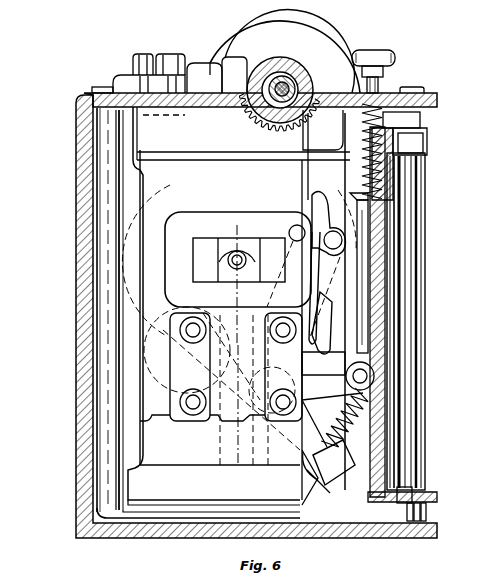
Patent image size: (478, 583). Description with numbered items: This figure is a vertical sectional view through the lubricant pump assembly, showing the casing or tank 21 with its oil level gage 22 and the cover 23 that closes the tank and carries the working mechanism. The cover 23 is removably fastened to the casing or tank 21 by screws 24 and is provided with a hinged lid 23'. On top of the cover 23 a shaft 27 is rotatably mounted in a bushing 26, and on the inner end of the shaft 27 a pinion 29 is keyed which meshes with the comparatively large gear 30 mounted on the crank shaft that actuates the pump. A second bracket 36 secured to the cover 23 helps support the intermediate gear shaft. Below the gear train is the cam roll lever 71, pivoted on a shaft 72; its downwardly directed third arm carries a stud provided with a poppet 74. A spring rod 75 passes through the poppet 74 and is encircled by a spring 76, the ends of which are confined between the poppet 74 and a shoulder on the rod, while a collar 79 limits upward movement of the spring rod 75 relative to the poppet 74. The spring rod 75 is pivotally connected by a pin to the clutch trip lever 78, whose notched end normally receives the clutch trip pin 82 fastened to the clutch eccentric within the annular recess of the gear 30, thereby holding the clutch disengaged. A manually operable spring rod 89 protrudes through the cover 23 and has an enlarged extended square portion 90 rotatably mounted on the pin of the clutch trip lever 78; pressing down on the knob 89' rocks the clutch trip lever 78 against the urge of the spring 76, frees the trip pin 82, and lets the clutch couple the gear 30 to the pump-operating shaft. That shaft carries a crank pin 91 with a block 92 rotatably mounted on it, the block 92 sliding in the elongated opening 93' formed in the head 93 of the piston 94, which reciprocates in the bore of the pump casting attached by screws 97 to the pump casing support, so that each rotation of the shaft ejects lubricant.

The casing or tank 21 is at (84, 240).
The oil level gage 22 is at (405, 290).
The cover 23 is at (236, 80).
The hinged lid 23' is at (285, 51).
The screws 24 is at (422, 96).
The bushing 26 is at (287, 72).
The shaft 27 is at (292, 88).
The pinion 29 is at (258, 113).
The gear 30 is at (236, 122).
The second bracket 36 is at (327, 212).
The cam roll lever 71 is at (214, 420).
The shaft 72 is at (305, 361).
The poppet 74 is at (332, 470).
The spring rod 75 is at (348, 378).
The spring 76 is at (330, 443).
The clutch trip lever 78 is at (318, 312).
The collar 79 is at (323, 489).
The clutch trip pin 82 is at (291, 230).
The manually operable spring rod 89 is at (394, 127).
The knob 89' is at (385, 50).
The enlarged extended square portion 90 is at (360, 292).
The crank pin 91 is at (237, 255).
The block 92 is at (220, 252).
The head 93 is at (238, 249).
The elongated opening 93' is at (176, 277).
The piston 94 is at (245, 209).
The screws 97 is at (186, 410).